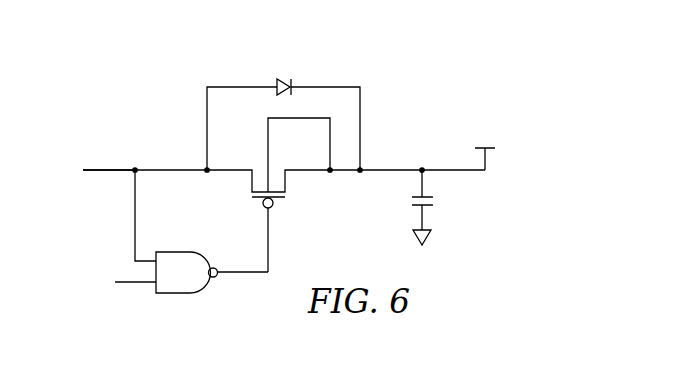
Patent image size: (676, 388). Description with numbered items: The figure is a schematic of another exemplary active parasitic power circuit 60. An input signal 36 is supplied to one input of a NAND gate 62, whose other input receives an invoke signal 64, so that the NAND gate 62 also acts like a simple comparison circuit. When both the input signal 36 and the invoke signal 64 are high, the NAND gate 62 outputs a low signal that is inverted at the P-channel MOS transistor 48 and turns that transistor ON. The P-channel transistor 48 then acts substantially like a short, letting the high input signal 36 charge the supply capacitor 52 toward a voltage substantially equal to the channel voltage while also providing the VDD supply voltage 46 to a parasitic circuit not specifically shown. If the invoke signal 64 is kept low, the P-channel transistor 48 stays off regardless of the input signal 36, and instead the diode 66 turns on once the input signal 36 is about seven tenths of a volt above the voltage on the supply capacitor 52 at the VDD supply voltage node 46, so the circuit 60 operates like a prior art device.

The parasitic power circuit embodiment 60 is at (147, 89).
The input signal 36 is at (116, 168).
The diode 66 is at (284, 80).
The P-channel MOS transistor 48 is at (256, 200).
The VDD supply voltage node 46 is at (445, 169).
The supply capacitor 52 is at (410, 200).
The invoke signal 64 is at (139, 285).
The NAND gate 62 is at (183, 294).